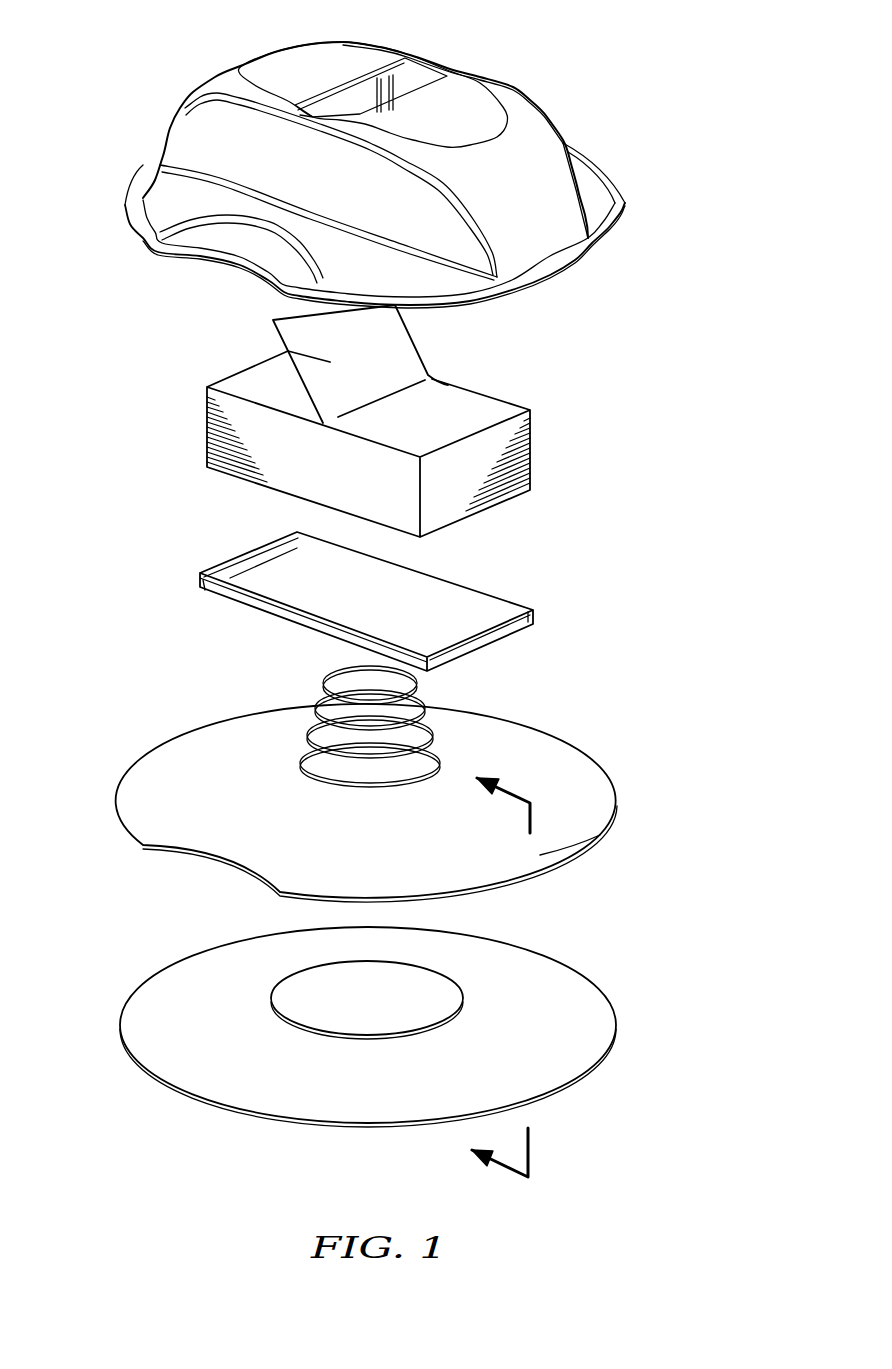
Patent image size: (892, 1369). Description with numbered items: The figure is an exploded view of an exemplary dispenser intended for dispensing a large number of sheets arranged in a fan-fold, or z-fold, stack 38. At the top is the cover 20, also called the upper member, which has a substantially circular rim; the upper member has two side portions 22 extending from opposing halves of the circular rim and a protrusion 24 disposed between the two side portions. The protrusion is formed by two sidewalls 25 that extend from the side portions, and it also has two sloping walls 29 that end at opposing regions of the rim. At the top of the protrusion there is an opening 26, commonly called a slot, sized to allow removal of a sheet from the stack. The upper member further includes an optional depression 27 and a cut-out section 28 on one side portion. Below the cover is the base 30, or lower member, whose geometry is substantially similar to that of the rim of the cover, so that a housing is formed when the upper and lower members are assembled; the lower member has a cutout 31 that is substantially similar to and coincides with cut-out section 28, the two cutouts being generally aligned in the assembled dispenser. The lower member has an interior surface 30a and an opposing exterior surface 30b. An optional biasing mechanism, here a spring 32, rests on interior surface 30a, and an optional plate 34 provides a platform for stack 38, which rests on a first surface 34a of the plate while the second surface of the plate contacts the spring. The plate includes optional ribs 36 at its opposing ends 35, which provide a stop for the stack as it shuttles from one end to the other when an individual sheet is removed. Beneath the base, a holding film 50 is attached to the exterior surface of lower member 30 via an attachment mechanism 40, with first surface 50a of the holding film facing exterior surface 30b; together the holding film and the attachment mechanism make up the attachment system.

The cover 20 is at (358, 159).
The side portions 22 is at (160, 200).
The protrusion 24 is at (358, 159).
The sidewalls 25 is at (200, 128).
The opening 26 is at (415, 78).
The depression 27 is at (307, 57).
The cut-out section 28 is at (233, 235).
The sloping walls 29 is at (532, 218).
The base 30 is at (393, 811).
The interior surface 30a is at (253, 806).
The exterior surface 30b is at (548, 833).
The cutout 31 is at (210, 860).
The spring 32 is at (423, 693).
The plate 34 is at (370, 592).
The first surface 34a is at (265, 587).
The opposing ends 35 is at (502, 635).
The ribs 36 is at (220, 563).
The stack 38 is at (523, 453).
The attachment mechanism 40 is at (443, 967).
The holding film 50 is at (396, 1060).
The first surface 50a is at (587, 1000).